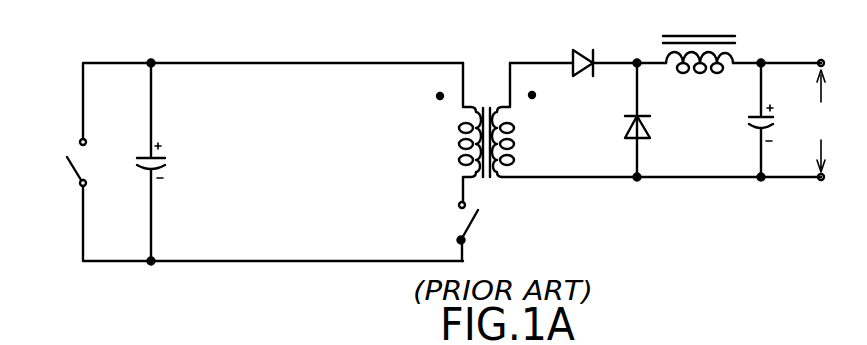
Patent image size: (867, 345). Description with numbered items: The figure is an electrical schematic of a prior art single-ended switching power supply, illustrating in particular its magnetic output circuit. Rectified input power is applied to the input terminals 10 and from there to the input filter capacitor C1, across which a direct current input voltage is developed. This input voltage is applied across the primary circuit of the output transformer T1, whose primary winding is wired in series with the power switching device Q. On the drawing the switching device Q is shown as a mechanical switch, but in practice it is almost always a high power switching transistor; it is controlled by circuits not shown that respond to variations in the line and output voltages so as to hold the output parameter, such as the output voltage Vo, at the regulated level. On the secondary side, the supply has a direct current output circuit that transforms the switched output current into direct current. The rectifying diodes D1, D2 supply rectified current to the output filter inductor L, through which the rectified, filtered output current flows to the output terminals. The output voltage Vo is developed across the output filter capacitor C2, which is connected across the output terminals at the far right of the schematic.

The input terminals 10 is at (67, 157).
The input filter capacitor C1 is at (166, 162).
The output transformer T1 is at (486, 119).
The power switching device Q is at (479, 231).
The rectifying diode D1 is at (584, 45).
The rectifying diode D2 is at (657, 120).
The output filter inductor L is at (699, 40).
The output filter capacitor C2 is at (777, 120).
The output voltage Vo is at (826, 120).